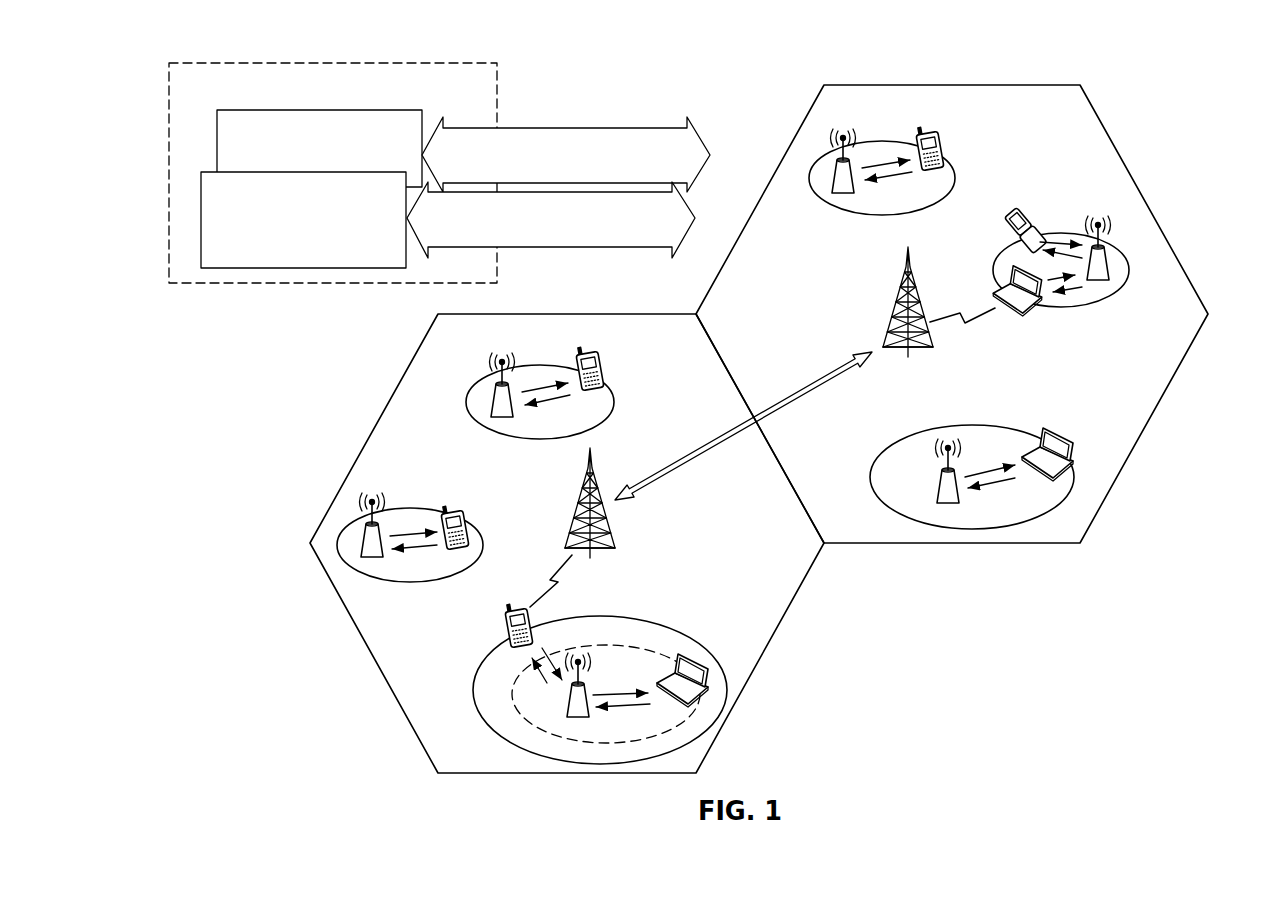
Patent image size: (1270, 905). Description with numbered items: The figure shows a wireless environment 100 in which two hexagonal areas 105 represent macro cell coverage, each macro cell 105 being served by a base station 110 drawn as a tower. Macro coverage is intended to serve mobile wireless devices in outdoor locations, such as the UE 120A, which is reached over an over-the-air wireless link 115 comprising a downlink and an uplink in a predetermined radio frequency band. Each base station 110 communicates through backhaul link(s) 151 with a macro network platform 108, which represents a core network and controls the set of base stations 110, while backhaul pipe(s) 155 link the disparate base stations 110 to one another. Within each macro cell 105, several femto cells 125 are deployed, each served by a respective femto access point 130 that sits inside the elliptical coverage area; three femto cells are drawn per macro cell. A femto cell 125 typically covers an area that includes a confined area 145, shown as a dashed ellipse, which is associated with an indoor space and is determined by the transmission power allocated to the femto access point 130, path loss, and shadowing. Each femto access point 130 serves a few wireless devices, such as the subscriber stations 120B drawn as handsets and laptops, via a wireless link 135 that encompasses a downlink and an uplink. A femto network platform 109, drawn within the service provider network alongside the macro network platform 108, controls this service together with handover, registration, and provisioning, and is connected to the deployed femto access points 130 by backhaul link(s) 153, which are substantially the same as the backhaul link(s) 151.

The wireless environment 100 is at (1170, 72).
The macro cell 105 is at (388, 400).
The macro network platform 108 is at (217, 137).
The femto network platform 109 is at (322, 257).
The base station 110 is at (583, 490).
The wireless link 115 is at (548, 573).
The UE 120A is at (507, 612).
The subscriber station 120B is at (593, 356).
The femto cell 125 is at (488, 427).
The femto access point 130 is at (495, 383).
The wireless link 135 is at (534, 388).
The confined area 145 is at (615, 645).
The backhaul link(s) 151 is at (656, 124).
The backhaul link(s) 153 is at (628, 254).
The backhaul pipe(s) 155 is at (335, 63).